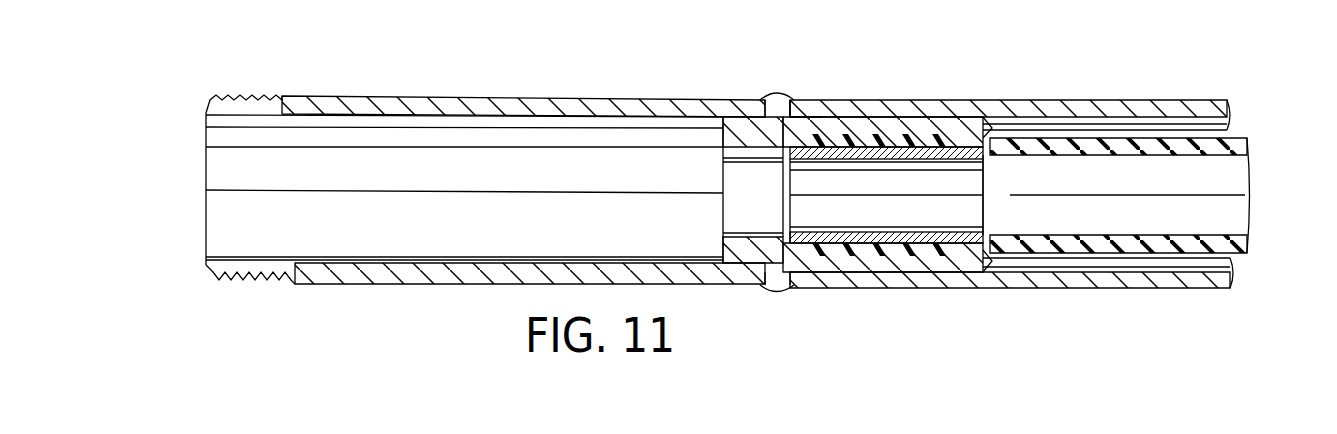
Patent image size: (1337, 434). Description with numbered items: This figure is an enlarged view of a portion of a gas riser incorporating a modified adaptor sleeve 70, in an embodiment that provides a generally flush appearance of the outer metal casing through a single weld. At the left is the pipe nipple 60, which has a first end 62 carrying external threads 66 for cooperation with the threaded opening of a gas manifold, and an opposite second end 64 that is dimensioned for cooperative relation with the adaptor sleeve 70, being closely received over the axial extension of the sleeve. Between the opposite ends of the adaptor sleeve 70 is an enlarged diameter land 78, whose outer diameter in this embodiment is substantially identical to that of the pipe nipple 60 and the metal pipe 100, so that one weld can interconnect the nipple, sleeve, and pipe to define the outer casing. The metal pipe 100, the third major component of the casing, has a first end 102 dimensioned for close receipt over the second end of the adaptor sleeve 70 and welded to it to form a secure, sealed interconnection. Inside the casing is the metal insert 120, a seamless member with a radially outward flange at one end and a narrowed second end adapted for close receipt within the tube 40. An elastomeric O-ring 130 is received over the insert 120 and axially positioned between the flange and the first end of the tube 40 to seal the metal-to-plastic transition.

The tube 40 is at (1205, 232).
The pipe nipple 60 is at (487, 99).
The first end of the pipe nipple 62 is at (206, 112).
The second end of the pipe nipple 64 is at (748, 108).
The external threads 66 is at (208, 270).
The adaptor sleeve 70 is at (918, 112).
The land 78 is at (779, 281).
The metal pipe 100 is at (1043, 100).
The first end of the metal pipe 102 is at (790, 107).
The metal insert 120 is at (967, 228).
The O-ring 130 is at (797, 244).